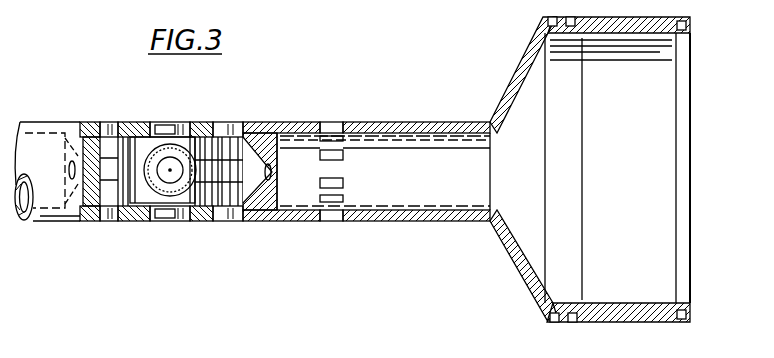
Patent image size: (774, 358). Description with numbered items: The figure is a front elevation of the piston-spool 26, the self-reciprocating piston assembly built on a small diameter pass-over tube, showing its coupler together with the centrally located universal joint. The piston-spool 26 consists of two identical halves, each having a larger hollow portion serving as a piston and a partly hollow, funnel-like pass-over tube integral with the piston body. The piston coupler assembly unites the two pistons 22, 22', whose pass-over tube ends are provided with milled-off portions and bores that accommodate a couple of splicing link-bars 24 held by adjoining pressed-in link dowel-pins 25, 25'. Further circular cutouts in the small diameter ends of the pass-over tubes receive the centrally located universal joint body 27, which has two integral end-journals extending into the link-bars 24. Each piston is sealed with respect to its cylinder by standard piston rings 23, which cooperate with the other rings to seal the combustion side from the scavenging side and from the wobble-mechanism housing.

The piston 22 is at (400, 168).
The piston 22' is at (56, 194).
The piston ring 23 is at (552, 318).
The splicing link-bar 24 is at (133, 222).
The link dowel-pin 25 is at (222, 195).
The link dowel-pin 25' is at (136, 146).
The piston-spool 26 is at (173, 168).
The universal joint body 27 is at (221, 121).